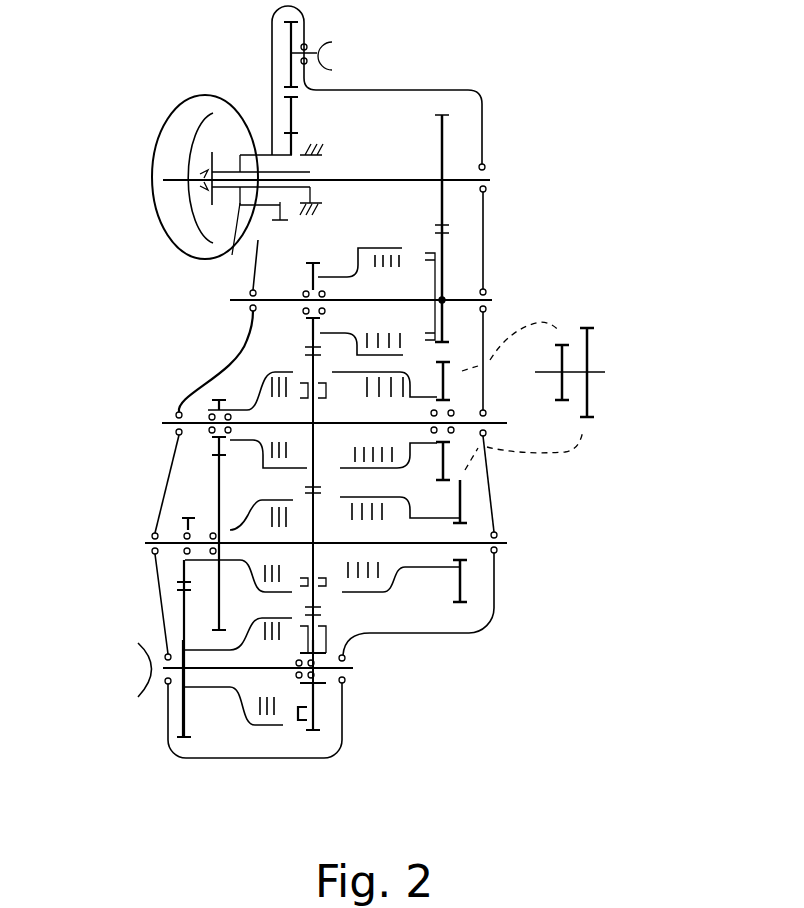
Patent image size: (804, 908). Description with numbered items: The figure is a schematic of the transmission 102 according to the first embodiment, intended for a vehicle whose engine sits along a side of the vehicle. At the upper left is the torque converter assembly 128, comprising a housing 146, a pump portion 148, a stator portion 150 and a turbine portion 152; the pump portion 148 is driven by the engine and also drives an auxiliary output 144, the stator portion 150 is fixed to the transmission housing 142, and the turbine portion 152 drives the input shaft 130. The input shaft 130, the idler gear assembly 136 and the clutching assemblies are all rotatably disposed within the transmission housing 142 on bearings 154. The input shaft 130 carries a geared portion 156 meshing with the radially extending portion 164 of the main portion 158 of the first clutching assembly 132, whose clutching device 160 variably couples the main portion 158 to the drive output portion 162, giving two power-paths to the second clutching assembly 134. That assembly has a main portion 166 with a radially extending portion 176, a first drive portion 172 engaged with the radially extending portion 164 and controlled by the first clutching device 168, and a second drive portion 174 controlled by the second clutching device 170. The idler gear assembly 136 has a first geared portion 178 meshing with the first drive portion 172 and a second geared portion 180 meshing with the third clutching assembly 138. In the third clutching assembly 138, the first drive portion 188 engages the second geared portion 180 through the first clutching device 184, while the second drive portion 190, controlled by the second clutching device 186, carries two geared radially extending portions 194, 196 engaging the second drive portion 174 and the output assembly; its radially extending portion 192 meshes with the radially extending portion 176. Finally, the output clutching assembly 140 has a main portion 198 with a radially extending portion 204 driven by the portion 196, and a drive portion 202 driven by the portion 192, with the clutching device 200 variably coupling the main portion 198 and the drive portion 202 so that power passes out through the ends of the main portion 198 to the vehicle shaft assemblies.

The transmission 102 is at (536, 62).
The torque converter assembly 128 is at (184, 134).
The input shaft 130 is at (384, 179).
The first clutching assembly 132 is at (466, 247).
The second clutching assembly 134 is at (209, 392).
The idler gear assembly 136 is at (567, 352).
The third clutching assembly 138 is at (177, 508).
The output clutching assembly 140 is at (208, 745).
The transmission housing 142 is at (494, 580).
The auxiliary output 144 is at (332, 70).
The housing 146 is at (152, 198).
The pump portion 148 is at (232, 130).
The stator portion 150 is at (200, 178).
The turbine portion 152 is at (170, 140).
The bearing 154 is at (485, 167).
The geared portion 156 is at (447, 122).
The main portion 158 is at (273, 298).
The clutching device 160 is at (364, 266).
The drive output portion 162 is at (320, 322).
The radially extending portion 164 is at (446, 265).
The main portion 166 is at (343, 414).
The first clutching device 168 is at (403, 501).
The second clutching device 170 is at (256, 440).
The first drive portion 172 is at (448, 382).
The second drive portion 174 is at (247, 408).
The radially extending portion 176 is at (403, 450).
The first geared portion 178 is at (590, 342).
The second geared portion 180 is at (565, 392).
The first clutching device 184 is at (395, 587).
The second clutching device 186 is at (256, 576).
The first drive portion 188 is at (492, 490).
The second drive portion 190 is at (232, 530).
The radially extending portion 192 is at (317, 600).
The geared radially extending portion 194 is at (220, 458).
The geared radially extending portion 196 is at (186, 522).
The main portion 198 is at (210, 688).
The clutching device 200 is at (255, 713).
The drive portion 202 is at (317, 715).
The radially extending portion 204 is at (181, 705).